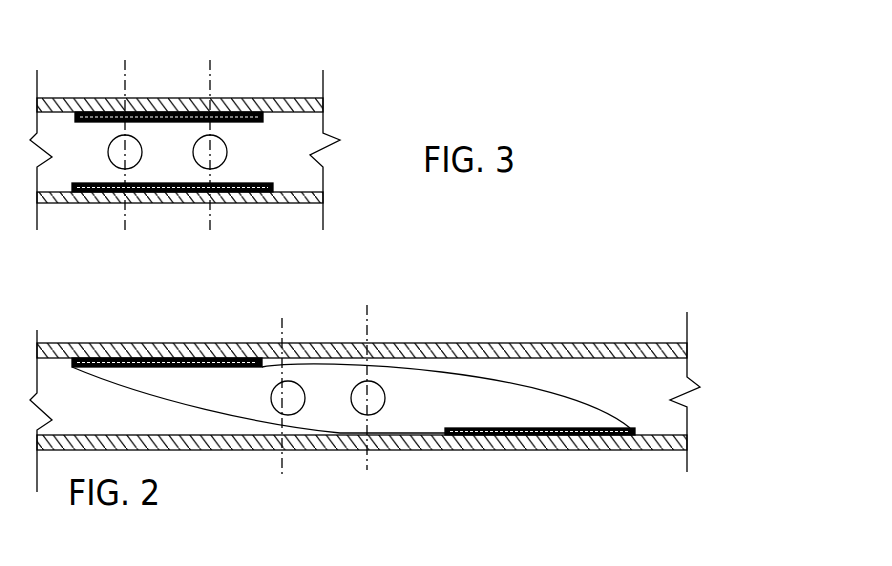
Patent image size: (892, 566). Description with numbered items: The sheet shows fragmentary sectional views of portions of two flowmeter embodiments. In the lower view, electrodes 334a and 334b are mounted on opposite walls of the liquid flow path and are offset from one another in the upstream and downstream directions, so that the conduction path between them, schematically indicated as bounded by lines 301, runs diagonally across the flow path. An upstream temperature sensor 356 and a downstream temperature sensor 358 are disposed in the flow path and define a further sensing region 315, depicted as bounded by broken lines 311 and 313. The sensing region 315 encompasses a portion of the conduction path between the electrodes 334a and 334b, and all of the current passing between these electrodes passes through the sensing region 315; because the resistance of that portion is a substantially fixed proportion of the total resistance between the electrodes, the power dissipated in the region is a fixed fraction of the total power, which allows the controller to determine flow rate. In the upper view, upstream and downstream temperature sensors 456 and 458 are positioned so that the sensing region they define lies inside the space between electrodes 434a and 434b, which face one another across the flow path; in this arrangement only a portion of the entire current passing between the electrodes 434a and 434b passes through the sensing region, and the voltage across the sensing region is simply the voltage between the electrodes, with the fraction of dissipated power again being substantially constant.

In FIG. 2, the lines 301 is at (440, 363).
In FIG. 2, the broken line 311 is at (278, 337).
In FIG. 2, the broken line 313 is at (373, 327).
In FIG. 2, the sensing region 315 is at (347, 357).
In FIG. 2, the electrode 334a is at (136, 358).
In FIG. 2, the electrode 334b is at (523, 450).
In FIG. 2, the upstream temperature sensor 356 is at (289, 393).
In FIG. 2, the downstream temperature sensor 358 is at (381, 411).
In FIG. 3, the electrode 434a is at (167, 100).
In FIG. 3, the electrode 434b is at (147, 203).
In FIG. 3, the upstream temperature sensor 456 is at (108, 155).
In FIG. 3, the downstream temperature sensor 458 is at (227, 150).